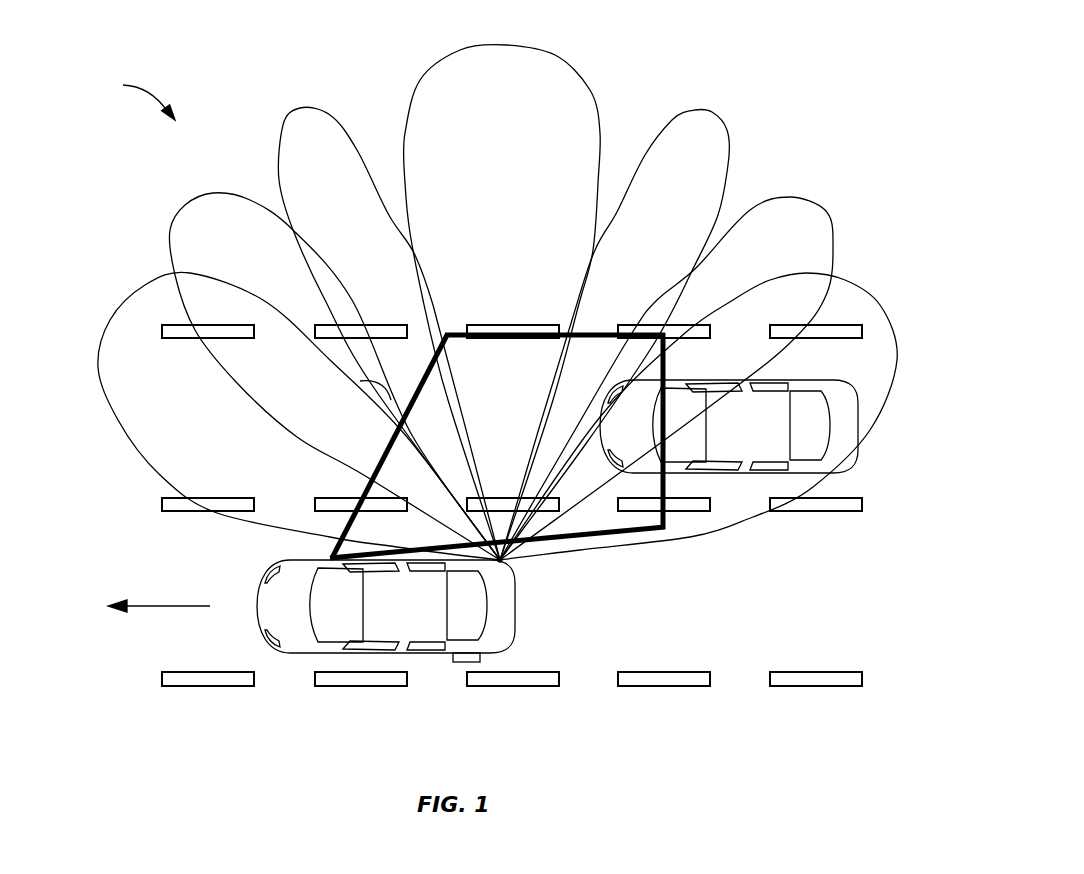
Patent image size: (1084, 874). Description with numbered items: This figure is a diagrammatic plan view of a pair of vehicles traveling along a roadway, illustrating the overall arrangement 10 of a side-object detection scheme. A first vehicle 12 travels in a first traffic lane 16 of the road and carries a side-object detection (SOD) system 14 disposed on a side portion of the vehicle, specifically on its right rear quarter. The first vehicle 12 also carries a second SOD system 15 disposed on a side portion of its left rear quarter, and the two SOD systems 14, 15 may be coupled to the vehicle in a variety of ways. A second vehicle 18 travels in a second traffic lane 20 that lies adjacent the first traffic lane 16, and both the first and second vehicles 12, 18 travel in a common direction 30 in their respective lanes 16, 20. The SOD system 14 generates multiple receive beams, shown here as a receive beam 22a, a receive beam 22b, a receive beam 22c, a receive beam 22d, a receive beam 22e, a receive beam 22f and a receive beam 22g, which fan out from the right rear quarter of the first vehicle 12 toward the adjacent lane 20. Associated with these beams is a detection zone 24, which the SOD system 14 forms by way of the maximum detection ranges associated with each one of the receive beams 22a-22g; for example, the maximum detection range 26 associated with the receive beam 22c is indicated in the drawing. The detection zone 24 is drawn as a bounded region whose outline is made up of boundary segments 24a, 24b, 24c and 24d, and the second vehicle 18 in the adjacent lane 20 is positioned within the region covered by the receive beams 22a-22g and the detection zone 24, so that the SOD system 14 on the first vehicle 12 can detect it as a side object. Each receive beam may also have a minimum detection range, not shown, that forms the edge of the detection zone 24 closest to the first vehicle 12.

The vehicle detection system 10 is at (134, 98).
The first vehicle 12 is at (515, 610).
The side-object detection (SOD) system 14 is at (517, 563).
The second SOD system 15 is at (453, 655).
The first traffic lane 16 is at (753, 630).
The second vehicle 18 is at (848, 425).
The second traffic lane 20 is at (193, 440).
The receive beam 22a is at (122, 300).
The receive beam 22b is at (187, 200).
The receive beam 22c is at (293, 107).
The receive beam 22d is at (505, 43).
The receive beam 22e is at (713, 110).
The receive beam 22f is at (820, 203).
The receive beam 22g is at (877, 300).
The detection zone 24 is at (457, 333).
The detection zone front boundary 24a is at (517, 330).
The detection zone left boundary 24b is at (363, 470).
The detection zone right boundary 24c is at (670, 484).
The detection zone rear boundary 24d is at (633, 533).
The maximum detection range 26 is at (363, 377).
The direction 30 is at (159, 619).